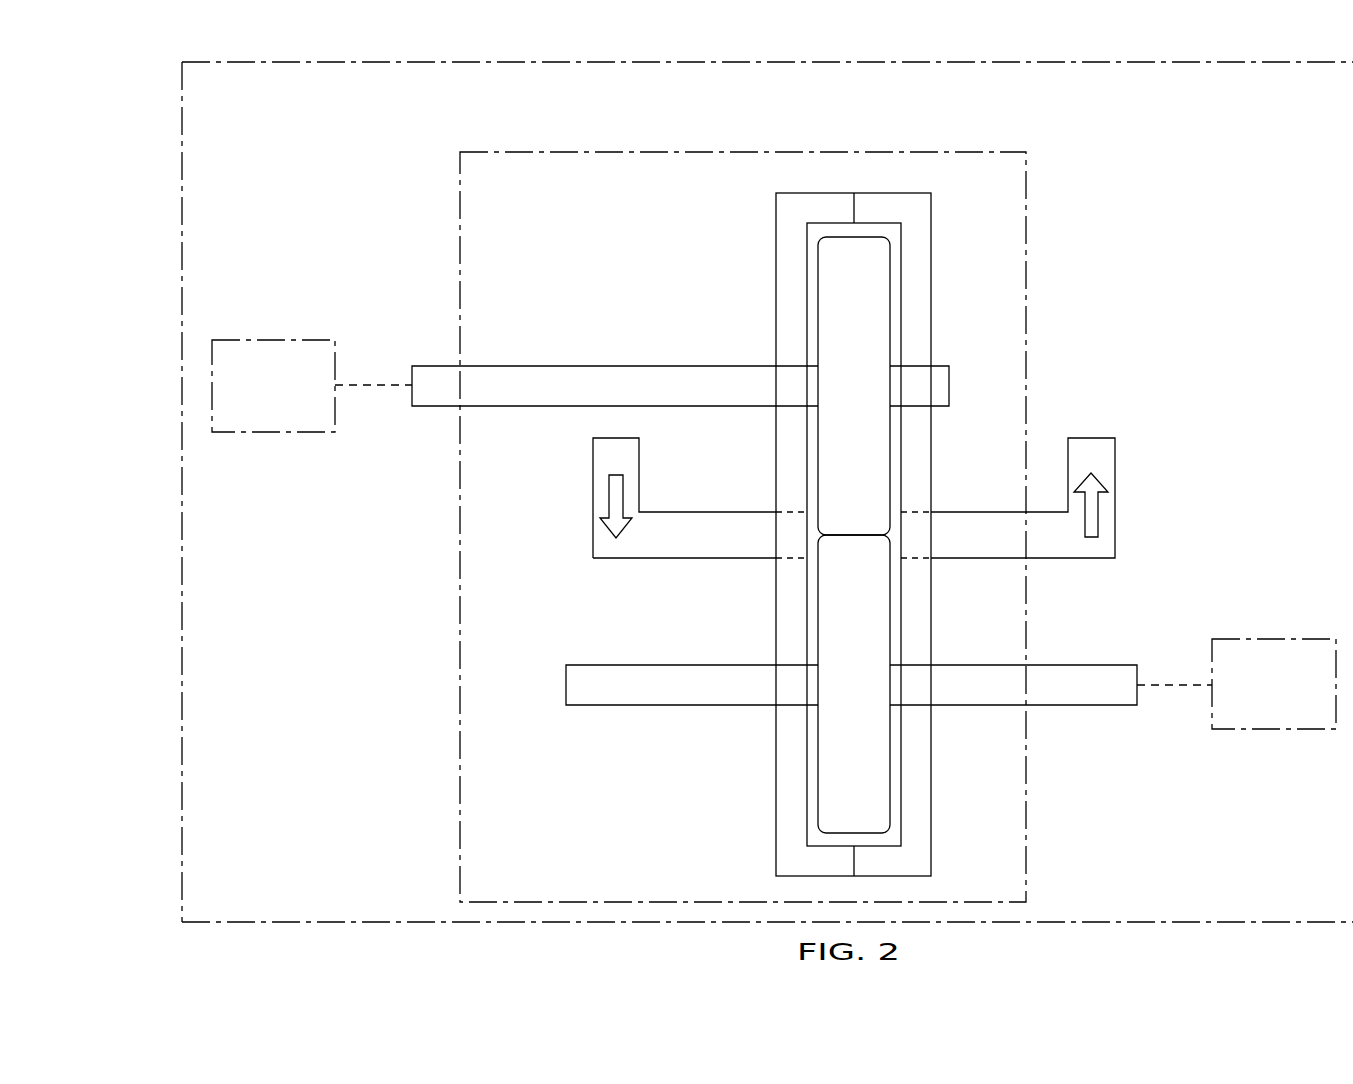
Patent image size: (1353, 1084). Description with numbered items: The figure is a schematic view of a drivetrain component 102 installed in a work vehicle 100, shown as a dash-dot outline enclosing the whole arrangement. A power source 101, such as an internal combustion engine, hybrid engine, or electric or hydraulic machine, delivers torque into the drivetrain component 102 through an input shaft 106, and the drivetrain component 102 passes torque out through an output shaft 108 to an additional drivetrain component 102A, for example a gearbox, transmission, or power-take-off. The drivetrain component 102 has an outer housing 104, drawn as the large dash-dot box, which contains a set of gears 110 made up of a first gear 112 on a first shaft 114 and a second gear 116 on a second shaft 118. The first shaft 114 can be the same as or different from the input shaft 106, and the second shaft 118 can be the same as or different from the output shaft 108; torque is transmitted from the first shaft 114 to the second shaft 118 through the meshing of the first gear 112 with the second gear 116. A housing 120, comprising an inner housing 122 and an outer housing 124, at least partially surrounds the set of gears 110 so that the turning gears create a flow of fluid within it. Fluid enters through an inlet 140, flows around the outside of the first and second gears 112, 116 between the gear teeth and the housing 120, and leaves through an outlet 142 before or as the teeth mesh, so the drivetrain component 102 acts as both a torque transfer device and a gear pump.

The work vehicle 100 is at (172, 64).
The power source 101 is at (295, 398).
The drivetrain component 102 is at (564, 113).
The additional drivetrain component 102A is at (1236, 684).
The outer housing 104 is at (458, 686).
The input shaft 106 is at (427, 377).
The output shaft 108 is at (1083, 680).
The set of gears 110 is at (683, 535).
The first gear 112 is at (855, 312).
The first shaft 114 is at (646, 386).
The second gear 116 is at (853, 772).
The second shaft 118 is at (668, 690).
The housing 120 is at (956, 480).
The inner housing 122 is at (808, 205).
The outer housing 124 is at (886, 205).
The inlet 140 is at (593, 452).
The outlet 142 is at (1087, 456).